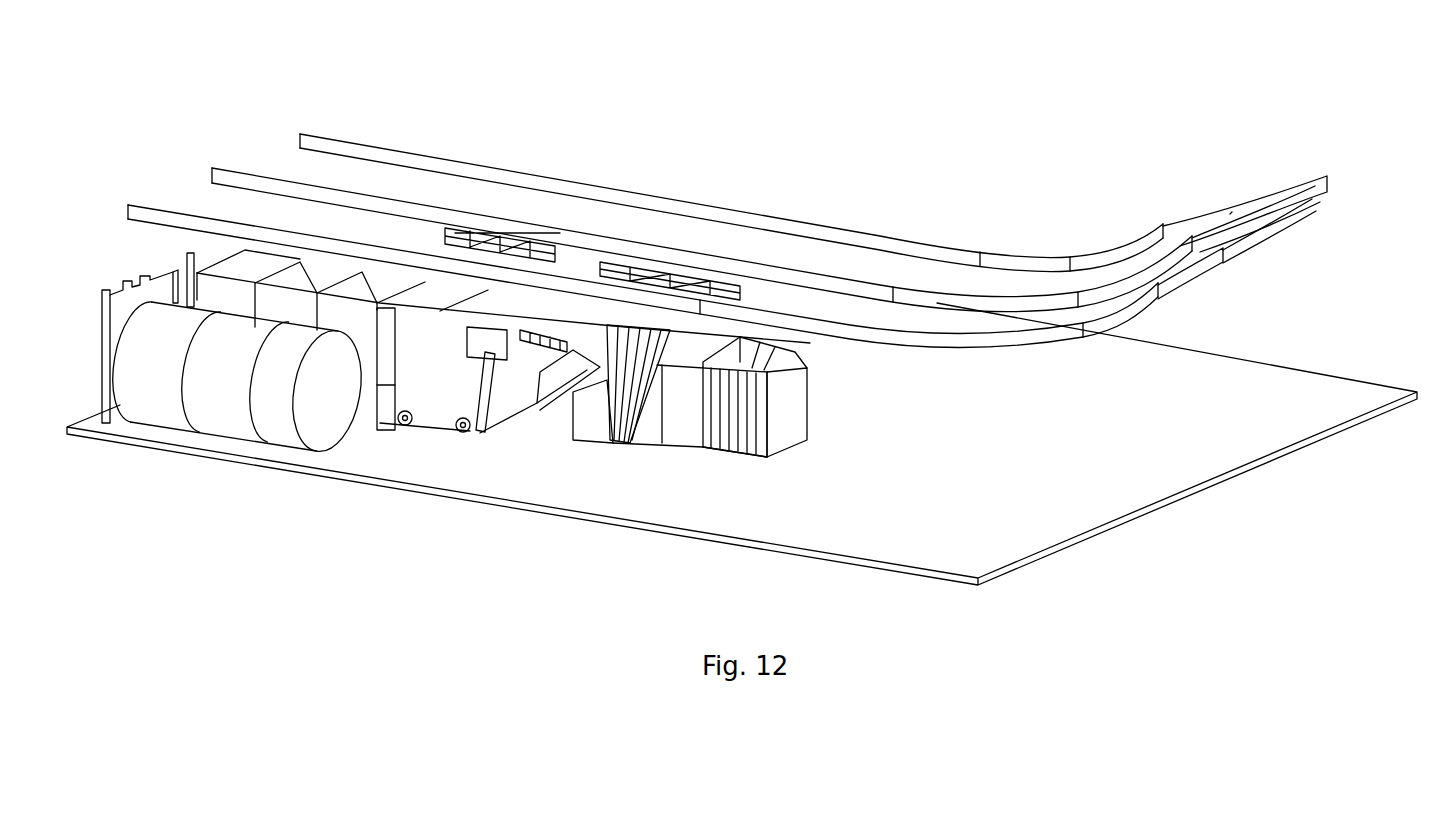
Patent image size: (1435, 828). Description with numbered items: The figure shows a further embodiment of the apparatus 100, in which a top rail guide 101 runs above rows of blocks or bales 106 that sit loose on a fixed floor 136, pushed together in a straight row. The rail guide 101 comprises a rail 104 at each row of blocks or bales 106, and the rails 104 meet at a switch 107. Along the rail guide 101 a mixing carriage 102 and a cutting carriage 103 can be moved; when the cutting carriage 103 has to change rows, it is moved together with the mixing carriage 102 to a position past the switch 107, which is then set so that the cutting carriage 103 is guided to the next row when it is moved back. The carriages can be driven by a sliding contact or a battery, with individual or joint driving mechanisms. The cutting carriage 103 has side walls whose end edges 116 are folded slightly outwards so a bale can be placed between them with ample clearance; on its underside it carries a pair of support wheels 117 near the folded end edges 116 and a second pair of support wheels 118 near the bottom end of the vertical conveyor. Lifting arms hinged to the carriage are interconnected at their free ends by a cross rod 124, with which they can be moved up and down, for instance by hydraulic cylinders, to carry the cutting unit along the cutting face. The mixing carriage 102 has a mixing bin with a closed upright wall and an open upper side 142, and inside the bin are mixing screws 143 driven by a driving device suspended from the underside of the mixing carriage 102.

The apparatus 100 is at (718, 72).
The top rail guide 101 is at (1275, 145).
The mixing carriage 102 is at (663, 415).
The cutting carriage 103 is at (435, 385).
The rail 104 is at (300, 135).
The blocks or bales 106 is at (348, 338).
The switch 107 is at (1228, 213).
The end edges of the side walls 116 is at (379, 385).
The pair of support wheels 117 is at (403, 430).
The second pair of support wheels 118 is at (463, 432).
The cross rod 124 is at (510, 248).
The fixed floor 136 is at (986, 548).
The open upper side 142 is at (737, 352).
The mixing screws 143 is at (721, 445).